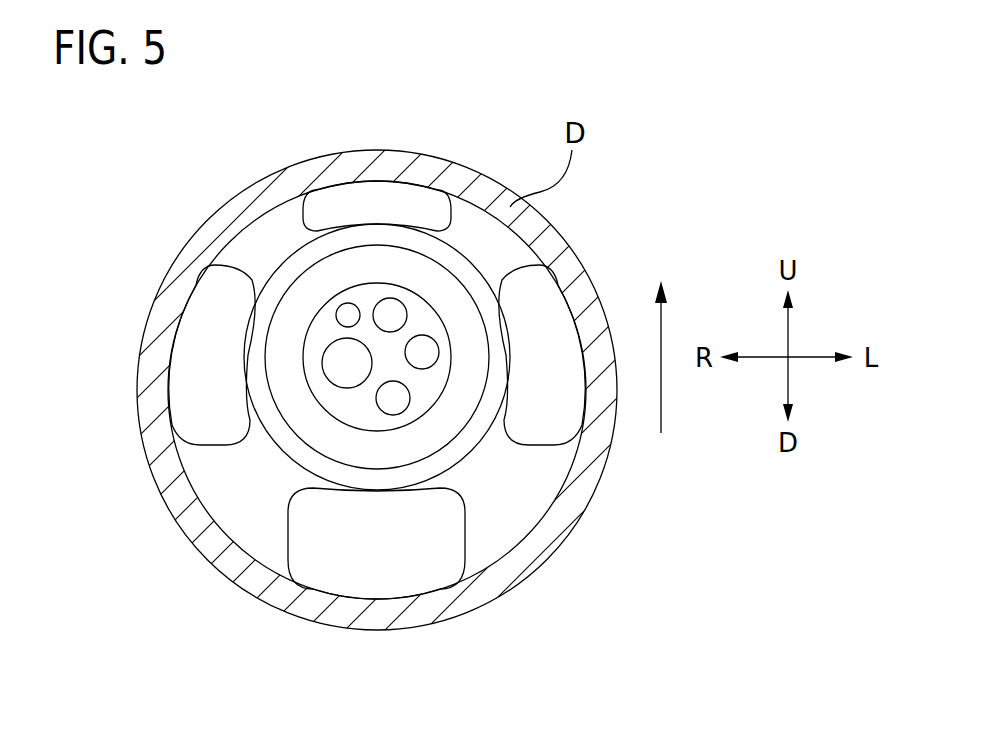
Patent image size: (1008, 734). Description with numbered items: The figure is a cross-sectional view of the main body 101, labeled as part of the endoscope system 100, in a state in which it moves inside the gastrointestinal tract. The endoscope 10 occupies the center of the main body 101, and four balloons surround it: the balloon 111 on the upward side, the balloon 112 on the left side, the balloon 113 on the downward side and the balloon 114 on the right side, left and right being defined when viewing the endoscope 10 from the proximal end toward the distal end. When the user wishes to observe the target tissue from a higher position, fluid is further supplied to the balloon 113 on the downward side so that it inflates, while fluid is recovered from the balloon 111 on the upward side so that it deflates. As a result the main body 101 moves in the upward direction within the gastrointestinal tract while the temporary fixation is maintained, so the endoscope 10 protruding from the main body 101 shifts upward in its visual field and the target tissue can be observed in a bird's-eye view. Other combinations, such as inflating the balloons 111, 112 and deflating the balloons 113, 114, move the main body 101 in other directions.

The endoscope system 100 is at (504, 400).
The main body 101 is at (468, 438).
The endoscope 10 is at (315, 398).
The balloon 111 is at (373, 202).
The balloon 112 is at (553, 385).
The balloon 113 is at (377, 555).
The balloon 114 is at (208, 348).